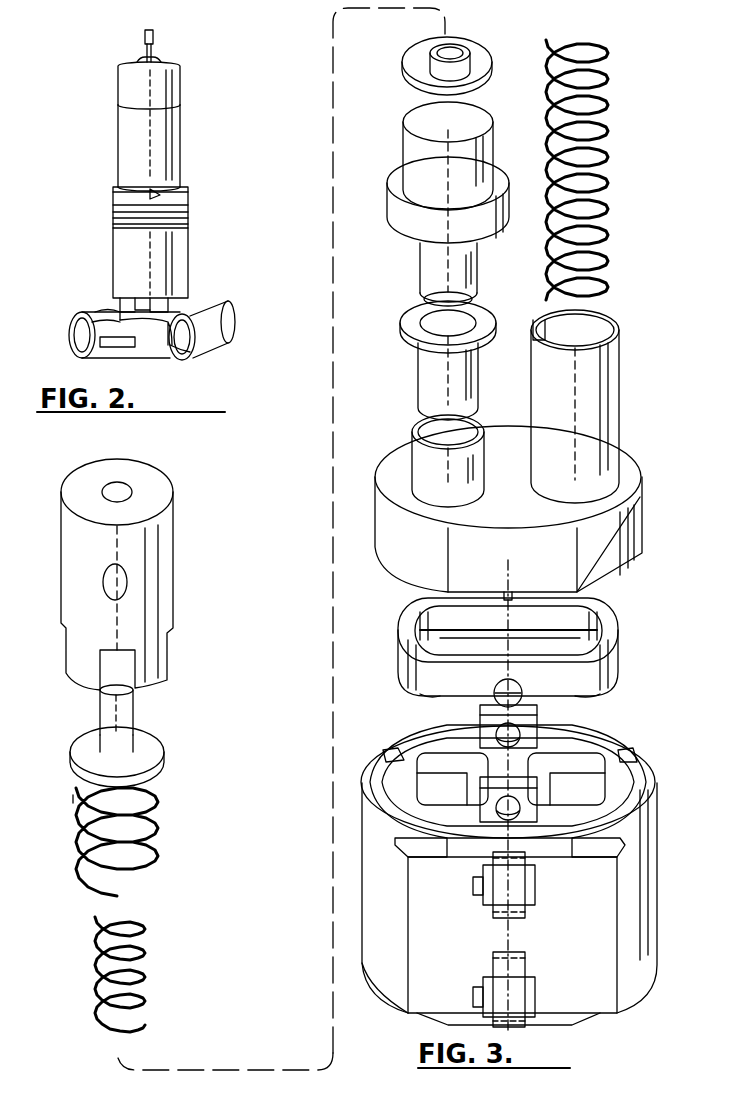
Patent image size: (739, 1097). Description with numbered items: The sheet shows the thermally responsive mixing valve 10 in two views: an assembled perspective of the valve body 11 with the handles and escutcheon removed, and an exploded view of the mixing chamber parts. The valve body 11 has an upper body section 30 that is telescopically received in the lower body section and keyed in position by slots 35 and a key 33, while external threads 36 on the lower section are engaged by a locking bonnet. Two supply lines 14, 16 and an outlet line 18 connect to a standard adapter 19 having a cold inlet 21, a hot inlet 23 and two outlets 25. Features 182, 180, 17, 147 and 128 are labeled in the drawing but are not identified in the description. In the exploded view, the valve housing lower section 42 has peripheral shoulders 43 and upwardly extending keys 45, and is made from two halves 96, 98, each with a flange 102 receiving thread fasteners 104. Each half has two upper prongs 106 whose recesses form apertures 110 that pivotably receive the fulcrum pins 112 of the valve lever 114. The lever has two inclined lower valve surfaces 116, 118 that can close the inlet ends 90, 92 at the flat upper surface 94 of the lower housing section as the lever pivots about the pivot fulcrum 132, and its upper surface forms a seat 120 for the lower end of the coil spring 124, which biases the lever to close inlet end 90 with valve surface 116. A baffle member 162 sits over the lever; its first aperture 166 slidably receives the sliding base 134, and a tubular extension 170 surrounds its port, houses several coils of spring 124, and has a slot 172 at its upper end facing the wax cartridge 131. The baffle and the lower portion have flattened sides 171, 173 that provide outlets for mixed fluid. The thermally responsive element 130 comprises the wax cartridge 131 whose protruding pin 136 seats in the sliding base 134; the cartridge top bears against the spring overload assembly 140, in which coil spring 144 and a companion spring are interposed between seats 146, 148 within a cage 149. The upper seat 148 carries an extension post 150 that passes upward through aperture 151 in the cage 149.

In FIG. 2, the thermally responsive mixing valve 10 is at (188, 58).
In FIG. 2, the nipple 182 is at (143, 35).
In FIG. 2, the base flange of nipple 180 is at (138, 62).
In FIG. 2, the upper body section 30 is at (120, 157).
In FIG. 2, the valve body 11 is at (192, 185).
In FIG. 2, the key 33 is at (118, 201).
In FIG. 2, the slots 35 is at (162, 195).
In FIG. 2, the external threads 36 is at (188, 215).
In FIG. 2, the lower cylinder 17 is at (175, 263).
In FIG. 2, the supply line 16 is at (145, 299).
In FIG. 2, the outlet line 18 is at (122, 301).
In FIG. 2, the supply line 14 is at (175, 301).
In FIG. 2, the hot inlet 23 is at (97, 304).
In FIG. 2, the outlets 25 is at (218, 313).
In FIG. 2, the cold inlet 21 is at (190, 353).
In FIG. 2, the standard adapter 19 is at (138, 351).
In FIG. 3, the aperture 151 is at (118, 485).
In FIG. 3, the cage 149 is at (75, 612).
In FIG. 3, the extension post 150 is at (103, 711).
In FIG. 3, the upper seat 148 is at (160, 753).
In FIG. 3, the spring overload assembly 140 is at (58, 816).
In FIG. 3, the large spring 147 is at (155, 876).
In FIG. 3, the coil spring 144 is at (140, 946).
In FIG. 3, the seat 146 is at (475, 58).
In FIG. 3, the thermally responsive element 130 is at (497, 110).
In FIG. 3, the wax cartridge 131 is at (417, 226).
In FIG. 3, the protruding pin 136 is at (425, 304).
In FIG. 3, the coil spring 124 is at (605, 240).
In FIG. 3, the slot 172 is at (538, 330).
In FIG. 3, the tube opening 128 is at (590, 331).
In FIG. 3, the sliding base 134 is at (420, 371).
In FIG. 3, the tubular extension 170 is at (600, 401).
In FIG. 3, the first aperture 166 is at (420, 431).
In FIG. 3, the baffle member 162 is at (637, 510).
In FIG. 3, the flattened side 171 is at (554, 556).
In FIG. 3, the fulcrum pins 112 is at (503, 597).
In FIG. 3, the seat 120 is at (618, 627).
In FIG. 3, the valve lever 114 is at (620, 640).
In FIG. 3, the pivot fulcrum 132 is at (516, 641).
In FIG. 3, the lower valve surface 116 is at (580, 705).
In FIG. 3, the lower valve surface 118 is at (430, 697).
In FIG. 3, the upper prongs 106 is at (478, 722).
In FIG. 3, the apertures 110 is at (520, 734).
In FIG. 3, the flat upper surface 94 is at (590, 746).
In FIG. 3, the inlet end 92 is at (430, 771).
In FIG. 3, the inlet end 90 is at (590, 771).
In FIG. 3, the keys 45 is at (395, 753).
In FIG. 3, the peripheral shoulders 43 is at (370, 801).
In FIG. 3, the lower section 42 is at (665, 827).
In FIG. 3, the half 96 is at (640, 883).
In FIG. 3, the flattened side 173 is at (600, 921).
In FIG. 3, the half 98 is at (385, 977).
In FIG. 3, the thread fasteners 104 is at (535, 887).
In FIG. 3, the flange 102 is at (520, 902).